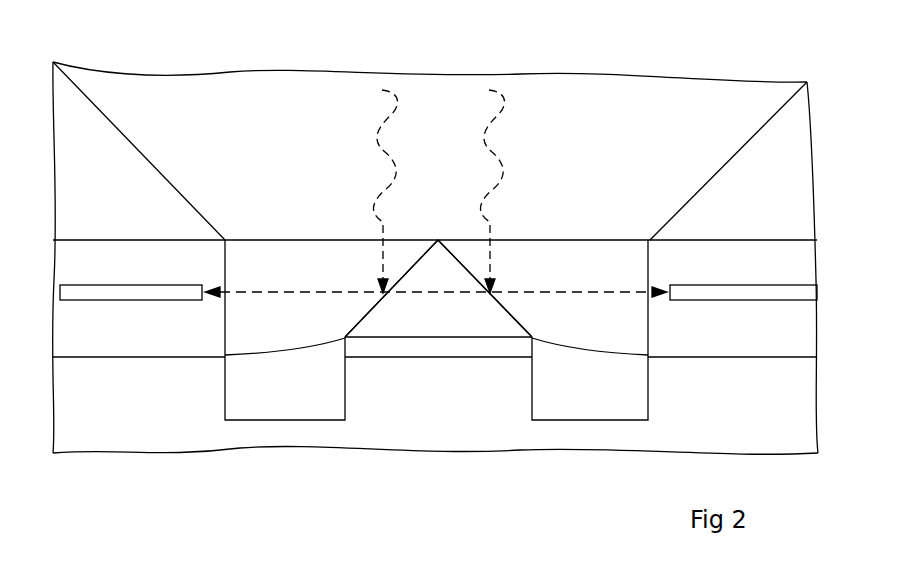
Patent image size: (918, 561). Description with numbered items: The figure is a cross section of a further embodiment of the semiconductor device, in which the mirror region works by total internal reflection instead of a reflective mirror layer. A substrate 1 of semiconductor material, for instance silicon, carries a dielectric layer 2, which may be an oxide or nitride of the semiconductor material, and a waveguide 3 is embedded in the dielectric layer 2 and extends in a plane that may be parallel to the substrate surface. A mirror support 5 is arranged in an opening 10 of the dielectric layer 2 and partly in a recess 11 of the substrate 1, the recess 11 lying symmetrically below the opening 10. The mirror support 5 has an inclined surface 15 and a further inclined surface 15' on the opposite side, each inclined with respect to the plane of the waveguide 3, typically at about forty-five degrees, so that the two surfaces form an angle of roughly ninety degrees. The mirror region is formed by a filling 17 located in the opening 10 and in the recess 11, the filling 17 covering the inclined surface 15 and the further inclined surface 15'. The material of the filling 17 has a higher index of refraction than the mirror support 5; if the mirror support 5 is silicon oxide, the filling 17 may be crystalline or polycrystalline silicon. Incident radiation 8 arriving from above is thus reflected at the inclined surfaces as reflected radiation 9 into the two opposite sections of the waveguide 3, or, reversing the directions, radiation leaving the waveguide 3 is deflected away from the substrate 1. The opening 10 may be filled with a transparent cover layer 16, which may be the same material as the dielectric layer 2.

The substrate 1 is at (152, 433).
The dielectric layer 2 is at (123, 345).
The waveguide 3 is at (140, 292).
The mirror support 5 is at (300, 377).
The incident radiation 8 is at (383, 262).
The reflected radiation 9 is at (294, 291).
The opening 10 is at (225, 337).
The recess 11 is at (300, 420).
The inclined surface 15 is at (391, 288).
The further inclined surface 15' is at (485, 288).
The cover layer 16 is at (600, 127).
The filling 17 is at (400, 240).